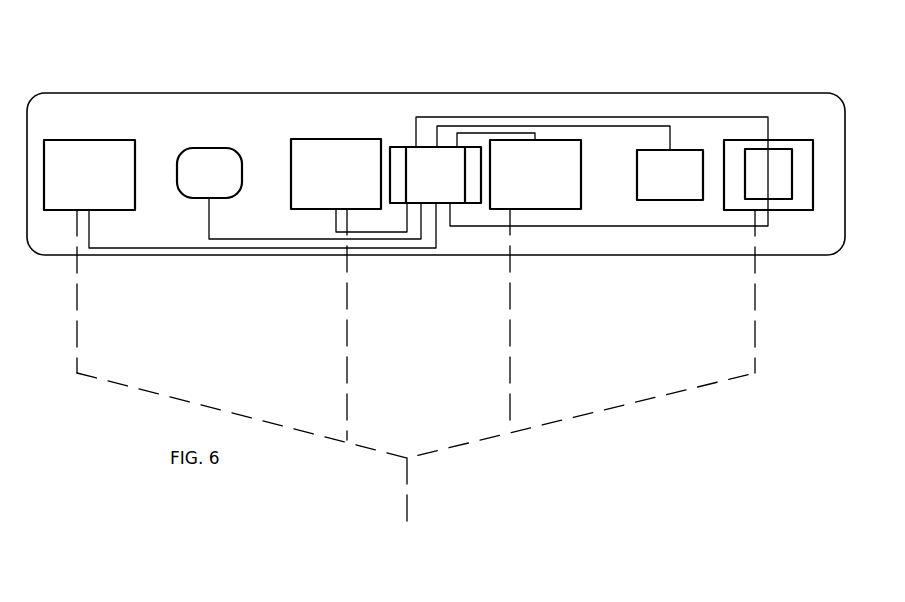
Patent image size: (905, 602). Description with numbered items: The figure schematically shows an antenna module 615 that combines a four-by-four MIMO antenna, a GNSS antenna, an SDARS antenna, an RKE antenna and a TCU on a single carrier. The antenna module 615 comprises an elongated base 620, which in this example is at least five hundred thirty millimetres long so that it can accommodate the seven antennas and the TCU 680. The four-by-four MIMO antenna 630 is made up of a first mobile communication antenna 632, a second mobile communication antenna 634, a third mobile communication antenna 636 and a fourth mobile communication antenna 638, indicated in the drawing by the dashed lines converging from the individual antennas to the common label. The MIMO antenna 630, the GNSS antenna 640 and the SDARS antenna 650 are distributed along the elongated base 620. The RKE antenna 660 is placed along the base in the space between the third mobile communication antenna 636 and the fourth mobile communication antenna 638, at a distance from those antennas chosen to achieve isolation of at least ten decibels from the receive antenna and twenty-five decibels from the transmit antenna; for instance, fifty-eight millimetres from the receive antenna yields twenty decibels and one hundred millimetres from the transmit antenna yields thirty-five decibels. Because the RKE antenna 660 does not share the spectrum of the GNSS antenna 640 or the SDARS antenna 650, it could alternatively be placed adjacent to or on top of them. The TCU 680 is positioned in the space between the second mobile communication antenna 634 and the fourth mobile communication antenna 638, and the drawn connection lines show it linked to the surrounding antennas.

The antenna module 615 is at (188, 84).
The elongated base 620 is at (332, 93).
The third mobile communication antenna 636 is at (136, 151).
The RKE antenna 660 is at (243, 158).
The fourth mobile communication antenna 638 is at (373, 150).
The TCU 680 is at (424, 147).
The second mobile communication antenna 634 is at (585, 172).
The GNSS antenna 640 is at (678, 150).
The first mobile communication antenna 632 is at (740, 140).
The SDARS antenna 650 is at (767, 163).
The 4×4 MIMO antenna 630 is at (416, 387).